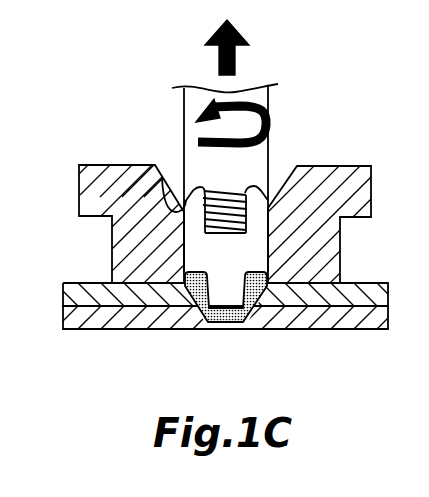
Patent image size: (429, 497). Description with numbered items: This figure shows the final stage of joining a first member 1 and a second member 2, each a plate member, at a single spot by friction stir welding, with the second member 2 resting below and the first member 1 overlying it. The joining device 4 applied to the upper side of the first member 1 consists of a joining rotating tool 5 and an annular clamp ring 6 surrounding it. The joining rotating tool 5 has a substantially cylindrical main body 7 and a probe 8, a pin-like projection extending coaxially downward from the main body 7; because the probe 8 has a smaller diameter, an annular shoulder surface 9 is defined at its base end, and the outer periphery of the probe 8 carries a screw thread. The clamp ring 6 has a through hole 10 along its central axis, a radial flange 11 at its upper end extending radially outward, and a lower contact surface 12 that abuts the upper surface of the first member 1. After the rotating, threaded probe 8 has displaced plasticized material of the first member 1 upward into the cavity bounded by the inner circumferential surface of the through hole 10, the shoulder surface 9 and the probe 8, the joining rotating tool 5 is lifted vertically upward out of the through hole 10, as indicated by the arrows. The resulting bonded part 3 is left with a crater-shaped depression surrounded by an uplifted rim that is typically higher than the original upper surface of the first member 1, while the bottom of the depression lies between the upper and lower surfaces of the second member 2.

The first member 1 is at (64, 293).
The second member 2 is at (66, 317).
The bonded part 3 is at (224, 322).
The joining device 4 is at (117, 113).
The joining rotating tool 5 is at (264, 78).
The clamp ring 6 is at (347, 164).
The main body 7 is at (194, 94).
The probe 8 is at (224, 208).
The annular shoulder surface 9 is at (162, 178).
The through hole 10 is at (258, 255).
The radial flange 11 is at (360, 186).
The contact surface 12 is at (318, 285).